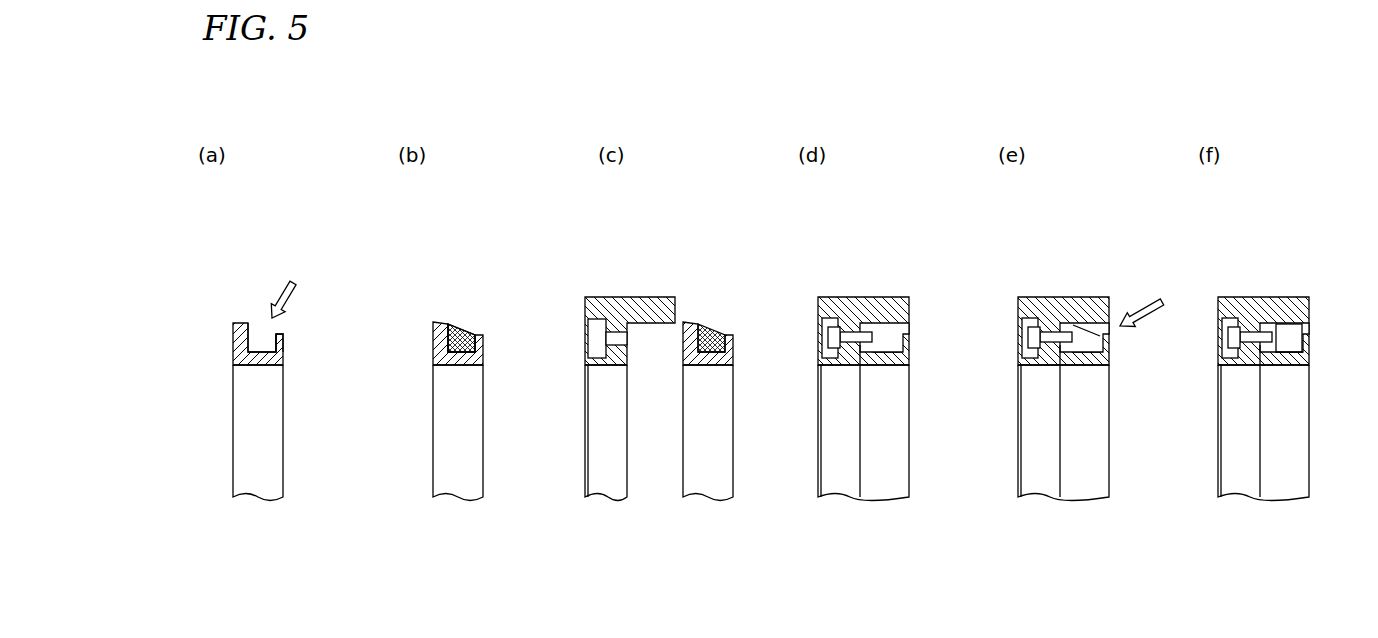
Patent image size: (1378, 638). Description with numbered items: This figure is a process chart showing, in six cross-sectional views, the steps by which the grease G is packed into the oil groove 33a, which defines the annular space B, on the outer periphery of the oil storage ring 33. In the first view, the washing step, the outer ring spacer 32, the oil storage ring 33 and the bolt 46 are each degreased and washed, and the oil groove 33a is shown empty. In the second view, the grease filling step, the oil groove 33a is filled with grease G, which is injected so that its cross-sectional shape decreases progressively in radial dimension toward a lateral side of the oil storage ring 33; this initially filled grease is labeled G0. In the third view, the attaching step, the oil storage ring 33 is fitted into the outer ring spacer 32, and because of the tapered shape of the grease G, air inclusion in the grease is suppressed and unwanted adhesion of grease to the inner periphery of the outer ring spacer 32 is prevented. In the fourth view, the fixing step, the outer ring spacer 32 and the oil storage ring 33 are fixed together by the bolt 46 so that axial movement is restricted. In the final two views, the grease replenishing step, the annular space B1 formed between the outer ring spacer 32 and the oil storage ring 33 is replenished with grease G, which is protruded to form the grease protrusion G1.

The outer ring spacer 32 is at (608, 302).
The oil storage ring 33 is at (268, 487).
The oil groove 33a is at (268, 350).
The bolt 46 is at (835, 322).
The annular space B is at (260, 335).
The annular space B1 is at (1095, 323).
The grease G is at (467, 340).
The gasket before compression G0 is at (462, 330).
The grease protrusion G1 is at (1305, 327).